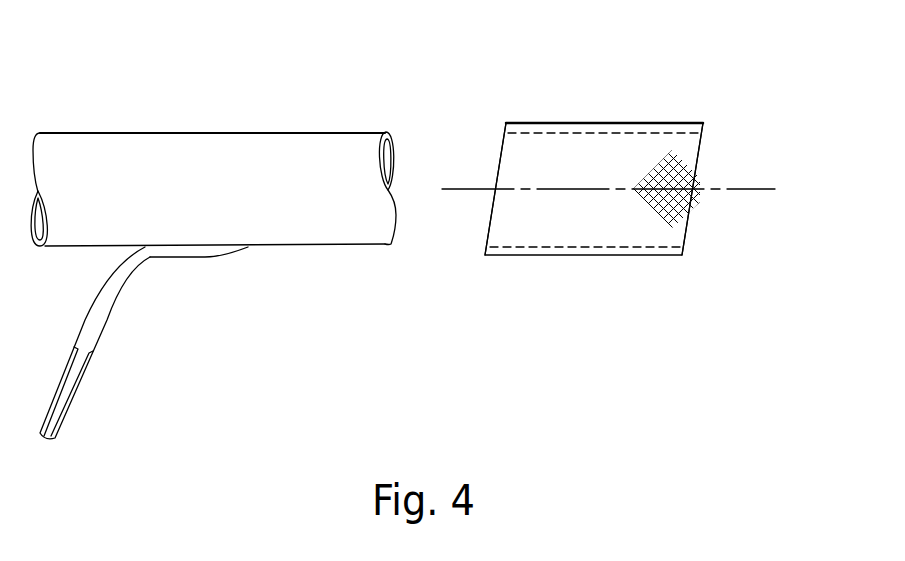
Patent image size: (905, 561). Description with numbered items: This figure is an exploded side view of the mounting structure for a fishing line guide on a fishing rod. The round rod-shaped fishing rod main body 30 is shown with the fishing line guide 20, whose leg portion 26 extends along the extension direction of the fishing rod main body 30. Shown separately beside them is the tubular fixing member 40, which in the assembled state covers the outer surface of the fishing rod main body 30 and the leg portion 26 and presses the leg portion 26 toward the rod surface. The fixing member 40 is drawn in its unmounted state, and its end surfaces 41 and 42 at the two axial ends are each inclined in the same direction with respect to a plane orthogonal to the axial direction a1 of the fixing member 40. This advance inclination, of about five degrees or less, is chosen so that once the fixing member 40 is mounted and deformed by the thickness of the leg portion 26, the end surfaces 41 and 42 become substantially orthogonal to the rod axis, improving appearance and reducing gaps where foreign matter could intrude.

The fishing rod main body 30 is at (212, 132).
The leg portion 26 is at (200, 258).
The fishing line guide 20 is at (115, 303).
The fixing member 40 is at (590, 122).
The end surface 41 is at (498, 165).
The end surface 42 is at (700, 155).
The axial direction a1 is at (627, 192).